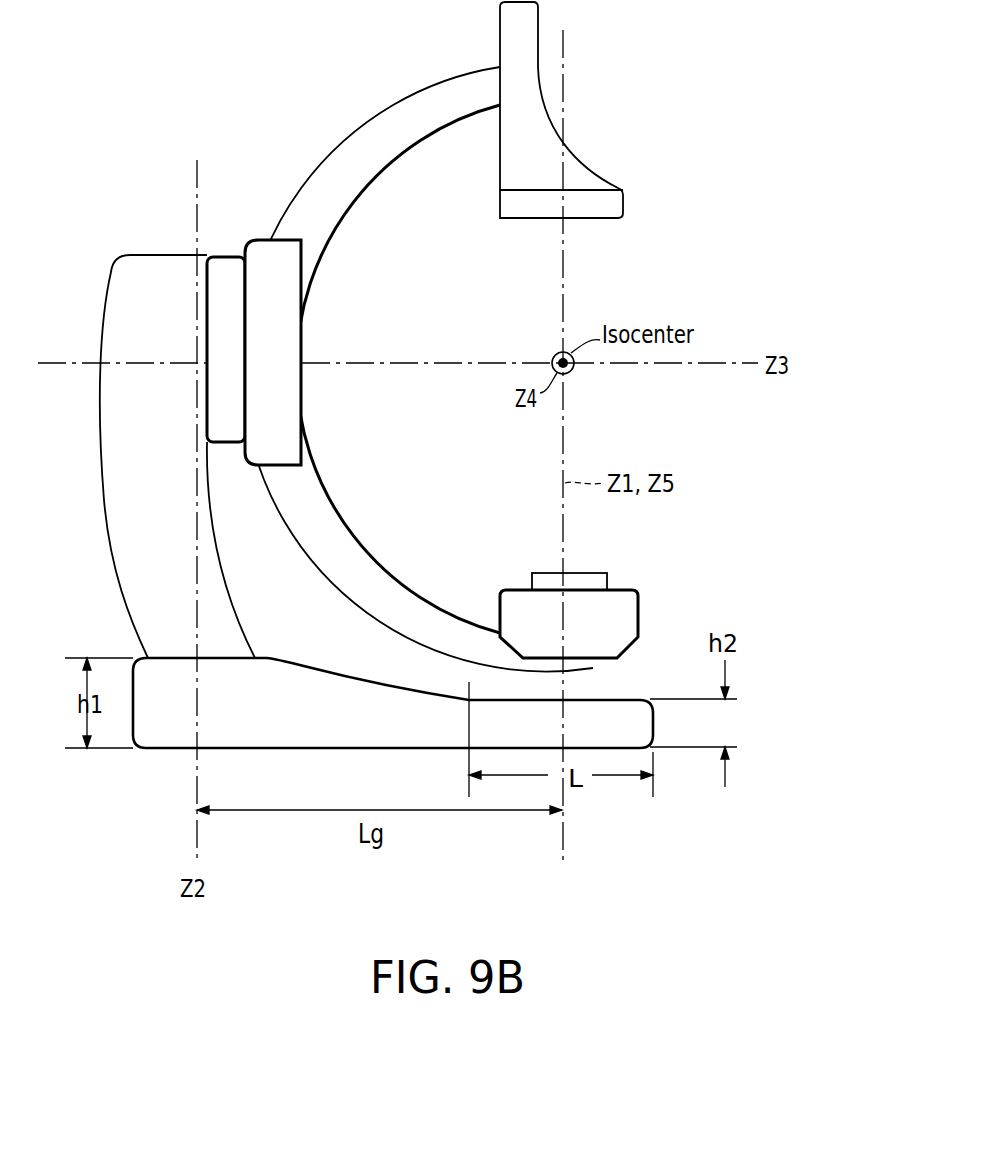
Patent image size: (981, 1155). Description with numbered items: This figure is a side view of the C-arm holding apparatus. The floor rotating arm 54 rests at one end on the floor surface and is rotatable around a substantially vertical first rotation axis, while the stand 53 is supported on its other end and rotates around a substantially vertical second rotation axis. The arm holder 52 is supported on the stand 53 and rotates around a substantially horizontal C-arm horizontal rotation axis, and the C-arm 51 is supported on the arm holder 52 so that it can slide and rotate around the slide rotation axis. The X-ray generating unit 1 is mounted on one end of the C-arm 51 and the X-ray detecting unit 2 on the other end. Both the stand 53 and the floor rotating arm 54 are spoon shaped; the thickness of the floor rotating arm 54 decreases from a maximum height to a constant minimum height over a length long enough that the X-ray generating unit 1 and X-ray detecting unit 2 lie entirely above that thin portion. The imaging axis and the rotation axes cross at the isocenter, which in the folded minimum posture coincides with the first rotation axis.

The X-ray generating unit 1 is at (632, 612).
The X-ray detecting unit 2 is at (613, 203).
The C-arm 51 is at (433, 88).
The arm holder 52 is at (262, 253).
The stand 53 is at (157, 265).
The floor rotating arm 54 is at (646, 716).